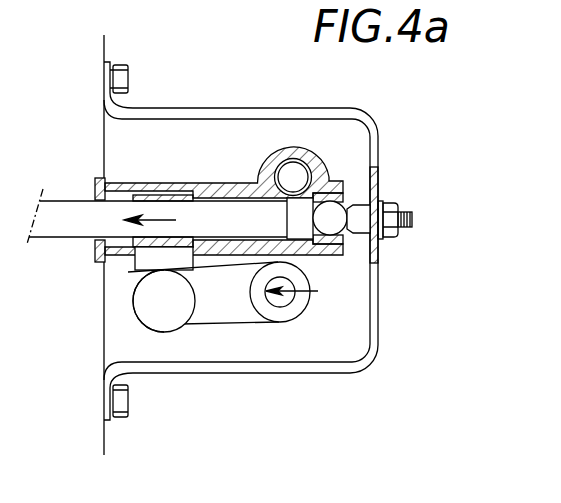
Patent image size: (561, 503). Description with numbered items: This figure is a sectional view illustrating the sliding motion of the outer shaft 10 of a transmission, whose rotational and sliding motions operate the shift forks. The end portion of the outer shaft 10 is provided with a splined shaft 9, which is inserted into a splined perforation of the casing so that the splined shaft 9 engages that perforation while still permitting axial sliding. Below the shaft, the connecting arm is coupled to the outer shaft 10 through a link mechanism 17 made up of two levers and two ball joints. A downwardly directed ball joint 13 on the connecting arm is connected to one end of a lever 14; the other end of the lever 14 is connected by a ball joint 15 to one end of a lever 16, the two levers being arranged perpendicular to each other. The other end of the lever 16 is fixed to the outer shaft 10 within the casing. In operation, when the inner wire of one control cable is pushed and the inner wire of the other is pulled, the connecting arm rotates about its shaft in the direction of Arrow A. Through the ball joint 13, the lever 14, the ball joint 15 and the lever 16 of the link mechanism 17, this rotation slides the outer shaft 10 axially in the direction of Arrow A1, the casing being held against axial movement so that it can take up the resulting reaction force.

The splined shaft 9 is at (219, 195).
The outer shaft 10 is at (170, 186).
The ball joint 13 is at (290, 346).
The lever 14 is at (203, 345).
The ball joint 15 is at (164, 349).
The lever 16 is at (116, 276).
The link mechanism 17 is at (103, 316).
The Arrow A is at (290, 325).
The Arrow A1 is at (154, 176).